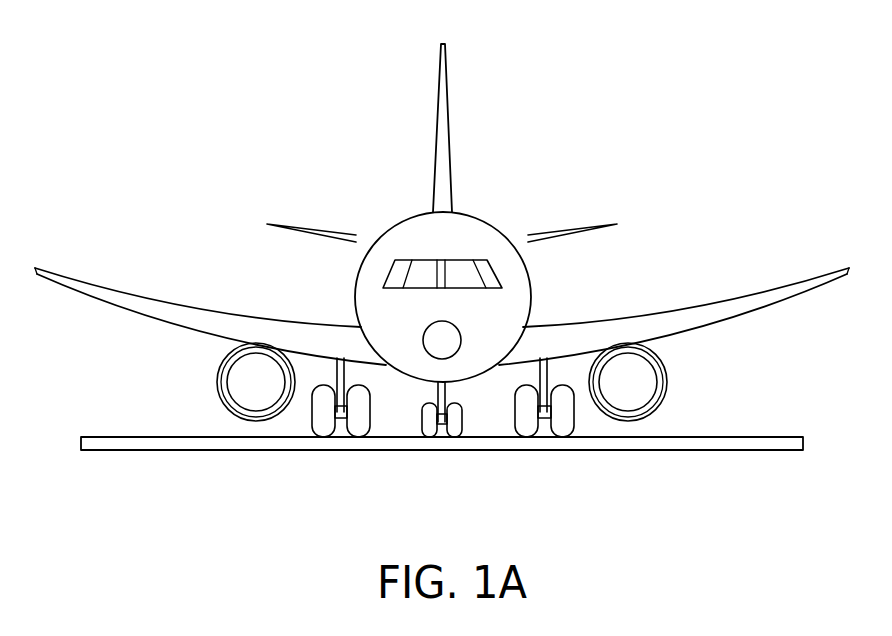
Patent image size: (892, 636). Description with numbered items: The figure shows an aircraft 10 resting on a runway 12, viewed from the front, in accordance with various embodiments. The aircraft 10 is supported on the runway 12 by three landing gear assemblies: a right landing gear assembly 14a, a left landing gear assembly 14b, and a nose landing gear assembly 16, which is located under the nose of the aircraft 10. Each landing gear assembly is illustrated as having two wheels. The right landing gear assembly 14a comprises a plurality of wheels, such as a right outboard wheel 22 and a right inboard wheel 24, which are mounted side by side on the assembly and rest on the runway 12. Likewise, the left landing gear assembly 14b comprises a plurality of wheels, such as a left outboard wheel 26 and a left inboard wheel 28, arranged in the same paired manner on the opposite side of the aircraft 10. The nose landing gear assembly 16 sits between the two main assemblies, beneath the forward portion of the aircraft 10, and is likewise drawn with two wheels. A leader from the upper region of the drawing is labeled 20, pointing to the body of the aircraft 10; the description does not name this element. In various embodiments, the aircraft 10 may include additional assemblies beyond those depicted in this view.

The aircraft 10 is at (240, 95).
The runway 12 is at (760, 435).
The right landing gear assembly 14a is at (340, 415).
The left landing gear assembly 14b is at (543, 420).
The nose landing gear assembly 16 is at (441, 420).
The fuselage 20 is at (442, 250).
The right outboard wheel 22 is at (320, 412).
The right inboard wheel 24 is at (362, 410).
The left outboard wheel 26 is at (567, 420).
The left inboard wheel 28 is at (513, 420).